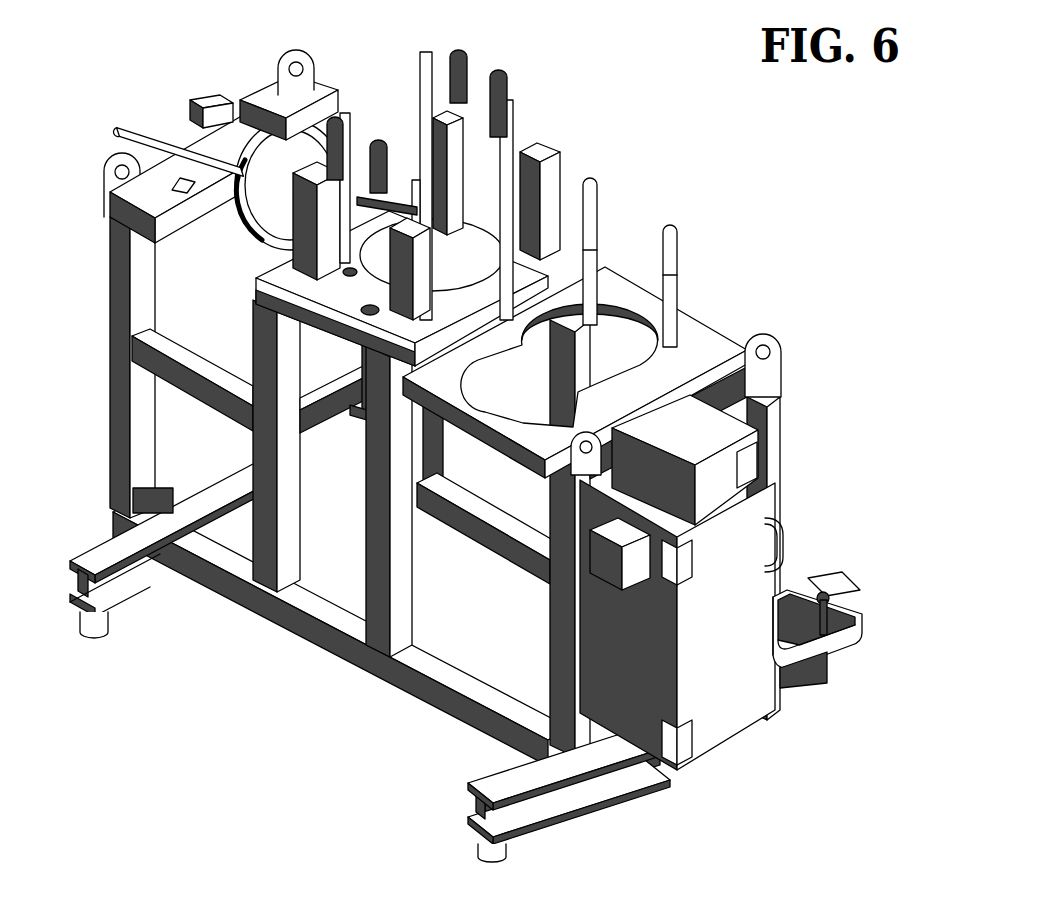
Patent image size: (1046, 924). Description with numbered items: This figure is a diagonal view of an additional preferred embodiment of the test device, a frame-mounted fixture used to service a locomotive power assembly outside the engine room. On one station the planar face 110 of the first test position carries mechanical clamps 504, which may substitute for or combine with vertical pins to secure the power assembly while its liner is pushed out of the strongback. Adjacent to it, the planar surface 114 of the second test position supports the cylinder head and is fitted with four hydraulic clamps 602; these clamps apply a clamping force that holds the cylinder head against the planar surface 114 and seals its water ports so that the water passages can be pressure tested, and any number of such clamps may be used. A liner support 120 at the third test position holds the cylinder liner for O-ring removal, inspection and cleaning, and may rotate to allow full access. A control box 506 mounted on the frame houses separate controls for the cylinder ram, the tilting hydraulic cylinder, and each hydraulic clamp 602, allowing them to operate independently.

The planar face 110 is at (703, 330).
The planar face 114 is at (258, 272).
The liner support 120 is at (257, 113).
The mechanical clamps 504 is at (556, 207).
The control box 506 is at (762, 506).
The hydraulic clamps 602 is at (487, 78).